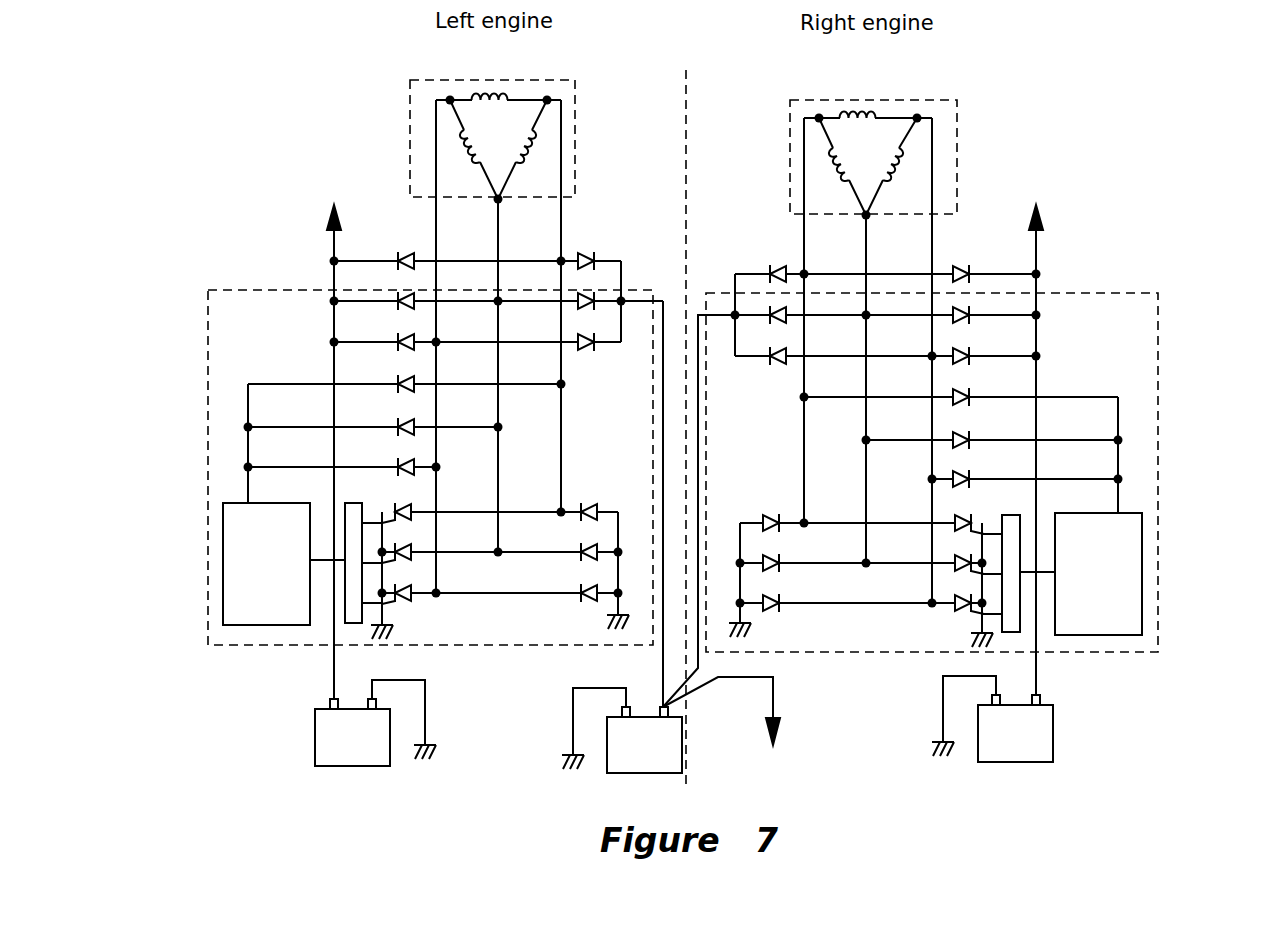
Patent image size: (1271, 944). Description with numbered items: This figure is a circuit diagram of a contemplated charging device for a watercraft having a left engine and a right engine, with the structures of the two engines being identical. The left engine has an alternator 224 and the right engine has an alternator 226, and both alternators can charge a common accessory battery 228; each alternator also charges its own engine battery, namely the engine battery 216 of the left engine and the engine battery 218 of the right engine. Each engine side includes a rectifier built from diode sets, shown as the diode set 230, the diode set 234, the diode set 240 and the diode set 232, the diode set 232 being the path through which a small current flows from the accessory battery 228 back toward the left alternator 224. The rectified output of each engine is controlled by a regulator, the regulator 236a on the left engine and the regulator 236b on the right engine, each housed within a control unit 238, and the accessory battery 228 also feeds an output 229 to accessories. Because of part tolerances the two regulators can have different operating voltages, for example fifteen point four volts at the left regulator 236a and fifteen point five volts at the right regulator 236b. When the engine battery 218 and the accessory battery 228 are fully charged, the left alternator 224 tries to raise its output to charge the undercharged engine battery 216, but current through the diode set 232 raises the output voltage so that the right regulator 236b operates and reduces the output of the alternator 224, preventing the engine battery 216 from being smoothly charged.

The engine battery 216 is at (323, 750).
The engine battery 218 is at (1053, 752).
The alternator 224 is at (524, 105).
The alternator 226 is at (918, 118).
The accessory battery 228 is at (640, 770).
The output terminal to load 229 is at (730, 726).
The rectifier diodes 230 is at (682, 295).
The diode set 232 is at (681, 544).
The rectifier diodes 234 is at (680, 292).
The regulator 236a is at (396, 542).
The regulator 236b is at (991, 550).
The voltage regulator control unit 238 is at (238, 578).
The rectifier diodes 240 is at (699, 423).